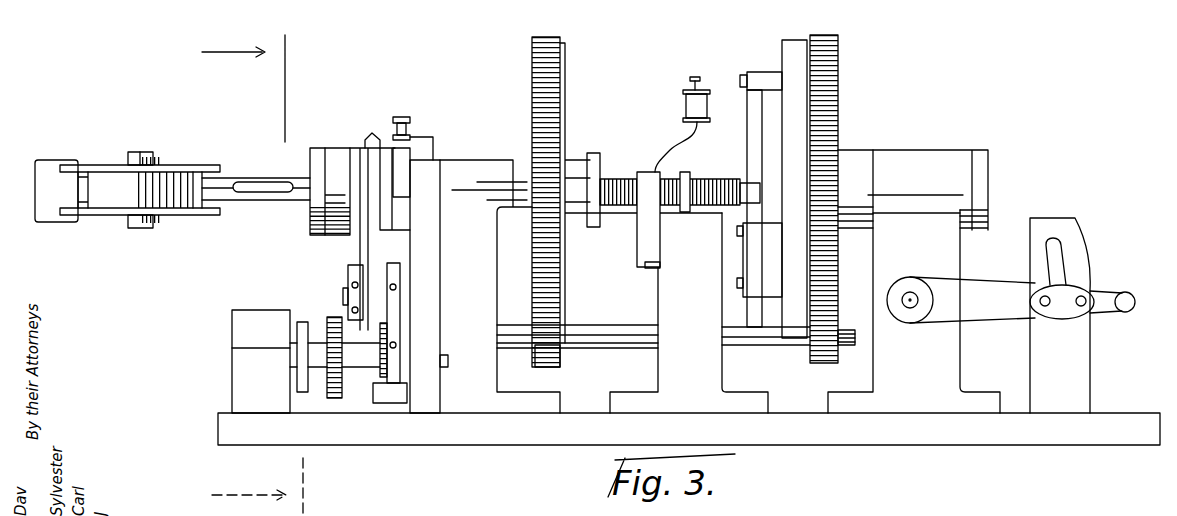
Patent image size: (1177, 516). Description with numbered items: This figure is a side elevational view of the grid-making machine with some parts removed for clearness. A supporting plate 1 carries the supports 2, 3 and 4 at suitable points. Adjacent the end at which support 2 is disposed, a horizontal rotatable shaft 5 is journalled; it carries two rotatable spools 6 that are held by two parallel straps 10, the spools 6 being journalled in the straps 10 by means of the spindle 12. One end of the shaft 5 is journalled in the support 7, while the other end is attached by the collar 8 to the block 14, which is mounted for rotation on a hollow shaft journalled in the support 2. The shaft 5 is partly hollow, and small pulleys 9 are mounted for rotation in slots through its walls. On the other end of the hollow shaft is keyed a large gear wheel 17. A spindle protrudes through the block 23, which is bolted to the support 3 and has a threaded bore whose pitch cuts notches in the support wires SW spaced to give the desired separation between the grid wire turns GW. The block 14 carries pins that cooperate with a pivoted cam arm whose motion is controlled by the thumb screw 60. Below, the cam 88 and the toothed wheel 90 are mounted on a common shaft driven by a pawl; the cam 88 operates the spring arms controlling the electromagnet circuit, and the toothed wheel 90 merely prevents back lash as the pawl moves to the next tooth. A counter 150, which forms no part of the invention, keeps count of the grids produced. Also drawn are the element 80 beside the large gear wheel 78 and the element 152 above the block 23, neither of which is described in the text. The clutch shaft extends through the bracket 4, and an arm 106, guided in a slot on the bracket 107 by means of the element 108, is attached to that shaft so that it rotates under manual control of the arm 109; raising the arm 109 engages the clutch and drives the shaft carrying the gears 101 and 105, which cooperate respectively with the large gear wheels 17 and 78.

The supporting plate 1 is at (903, 434).
The support 2 is at (534, 286).
The support 3 is at (708, 339).
The support 4 is at (918, 372).
The horizontal rotatable shaft 5 is at (274, 222).
The rotatable spools 6 is at (207, 165).
The support 7 is at (43, 190).
The collar 8 is at (318, 148).
The small pulleys 9 is at (262, 180).
The parallel straps 10 is at (163, 161).
The spindle 12 is at (150, 151).
The block 14 is at (334, 152).
The large gear wheel 17 is at (532, 128).
The block 23 is at (652, 258).
The thumb screw 60 is at (407, 117).
The large gear wheel 78 is at (849, 78).
The disk plate 80 is at (795, 45).
The cam 88 is at (303, 378).
The toothed wheel 90 is at (342, 397).
The gear 101 is at (565, 362).
The gear 105 is at (813, 362).
The arm 106 is at (984, 290).
The bracket 107 is at (1084, 386).
The element 108 is at (1065, 318).
The arm 109 is at (1127, 295).
The counter 150 is at (247, 327).
The valve 152 is at (683, 100).
The grid wire turns GW is at (623, 186).
The support wires SW is at (627, 207).